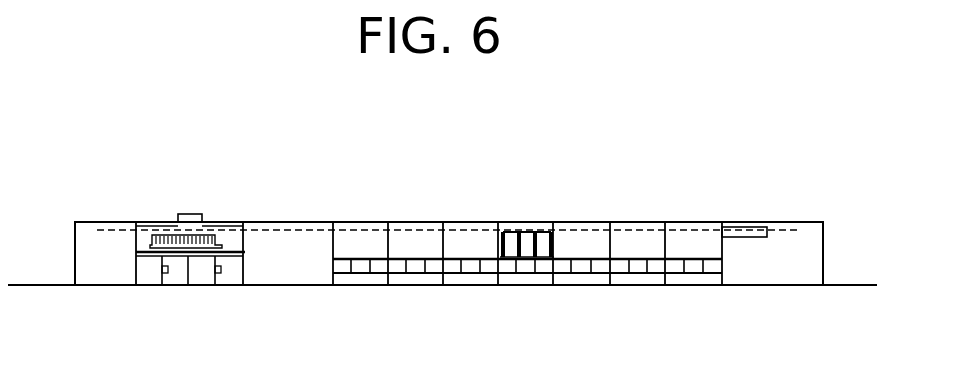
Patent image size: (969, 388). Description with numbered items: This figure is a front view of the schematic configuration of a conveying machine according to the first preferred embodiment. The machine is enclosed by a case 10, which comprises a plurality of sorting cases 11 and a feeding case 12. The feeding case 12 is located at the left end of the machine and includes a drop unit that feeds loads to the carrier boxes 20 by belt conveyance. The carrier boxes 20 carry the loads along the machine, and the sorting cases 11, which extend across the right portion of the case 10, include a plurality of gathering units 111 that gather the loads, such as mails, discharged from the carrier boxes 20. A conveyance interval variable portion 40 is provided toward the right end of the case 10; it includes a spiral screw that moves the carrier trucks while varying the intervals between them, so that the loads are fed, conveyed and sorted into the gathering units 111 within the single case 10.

The case 10 is at (790, 222).
The sorting case 11 is at (645, 222).
The feeding case 12 is at (190, 213).
The carrier box 20 is at (528, 222).
The conveyance interval variable portion 40 is at (752, 222).
The gathering unit 111 is at (527, 265).